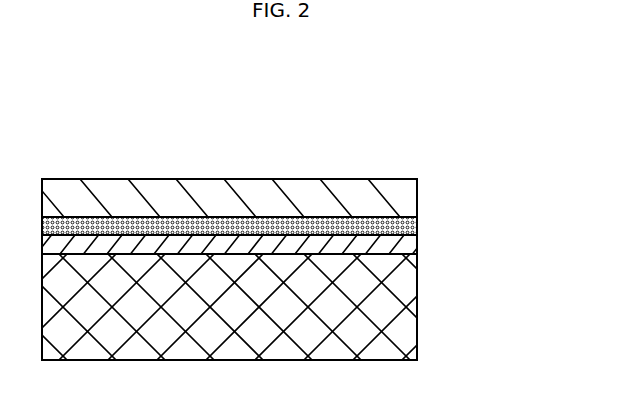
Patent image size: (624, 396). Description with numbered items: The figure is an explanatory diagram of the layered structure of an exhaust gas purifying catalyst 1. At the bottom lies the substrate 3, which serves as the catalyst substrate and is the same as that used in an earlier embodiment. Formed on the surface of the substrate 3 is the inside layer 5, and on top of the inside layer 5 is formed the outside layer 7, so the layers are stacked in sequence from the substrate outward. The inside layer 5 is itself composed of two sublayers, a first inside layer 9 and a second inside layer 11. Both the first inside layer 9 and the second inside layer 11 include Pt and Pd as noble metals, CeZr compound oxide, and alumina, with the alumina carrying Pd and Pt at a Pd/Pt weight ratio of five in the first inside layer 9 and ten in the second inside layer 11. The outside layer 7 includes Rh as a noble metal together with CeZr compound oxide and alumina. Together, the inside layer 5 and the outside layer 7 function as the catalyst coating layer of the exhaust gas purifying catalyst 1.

The exhaust gas purifying catalyst 1 is at (557, 57).
The substrate 3 is at (410, 305).
The inside layer 5 is at (285, 229).
The outside layer 7 is at (409, 200).
The first inside layer 9 is at (410, 244).
The second inside layer 11 is at (410, 226).